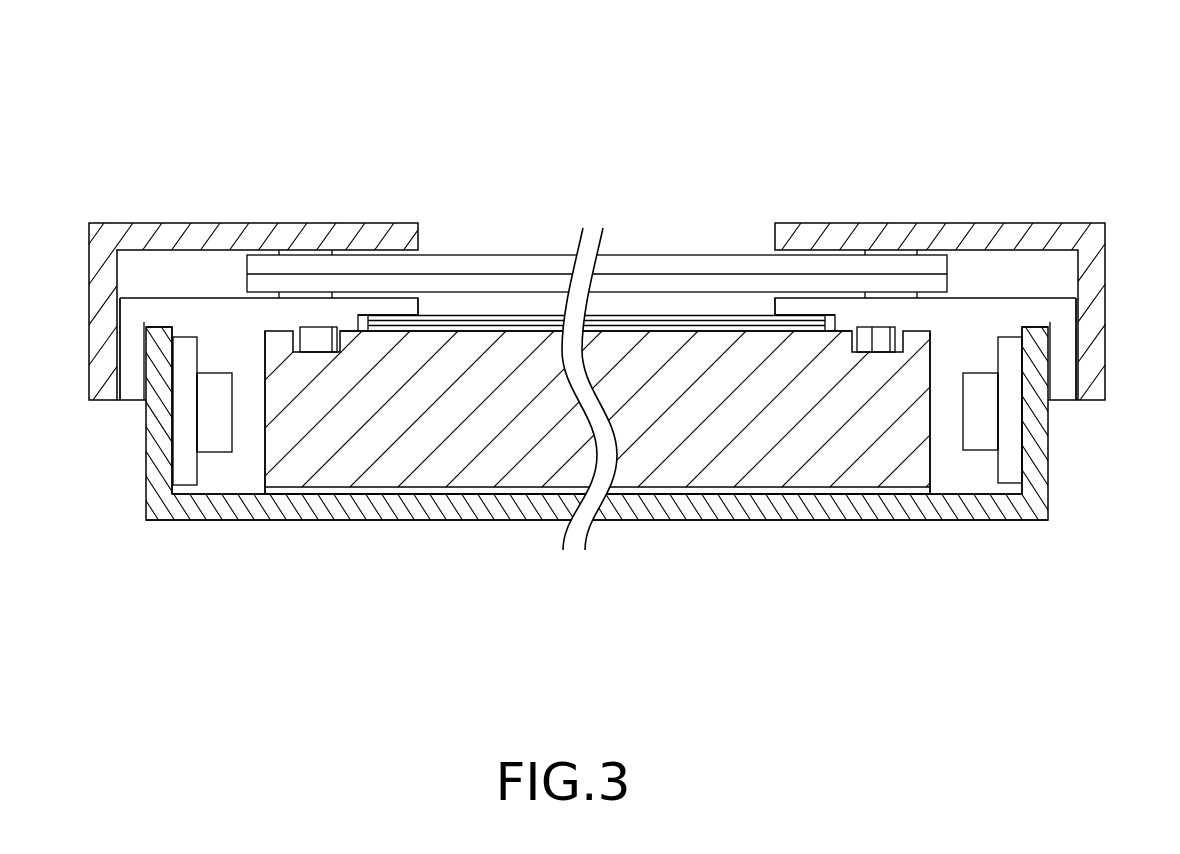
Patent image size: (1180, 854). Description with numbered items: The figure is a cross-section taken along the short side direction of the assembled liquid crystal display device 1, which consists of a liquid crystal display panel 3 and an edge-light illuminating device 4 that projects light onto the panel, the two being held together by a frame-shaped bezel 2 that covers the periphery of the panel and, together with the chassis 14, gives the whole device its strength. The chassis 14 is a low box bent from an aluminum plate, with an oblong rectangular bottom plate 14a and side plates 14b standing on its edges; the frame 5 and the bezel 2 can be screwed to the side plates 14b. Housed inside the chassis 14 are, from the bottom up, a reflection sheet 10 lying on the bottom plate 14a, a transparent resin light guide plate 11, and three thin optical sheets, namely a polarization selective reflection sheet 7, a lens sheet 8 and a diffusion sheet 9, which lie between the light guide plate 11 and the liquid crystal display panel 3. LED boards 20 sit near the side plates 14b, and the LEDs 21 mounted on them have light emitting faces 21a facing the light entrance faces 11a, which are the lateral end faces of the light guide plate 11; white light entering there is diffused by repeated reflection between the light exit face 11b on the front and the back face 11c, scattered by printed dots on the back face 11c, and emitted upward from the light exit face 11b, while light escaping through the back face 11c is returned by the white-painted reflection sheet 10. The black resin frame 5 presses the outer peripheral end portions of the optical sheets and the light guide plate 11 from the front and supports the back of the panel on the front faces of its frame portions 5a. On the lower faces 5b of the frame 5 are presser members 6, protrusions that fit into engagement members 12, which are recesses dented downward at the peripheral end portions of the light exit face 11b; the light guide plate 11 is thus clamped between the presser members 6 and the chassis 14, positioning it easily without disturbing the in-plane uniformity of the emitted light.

The liquid crystal display device 1 is at (1019, 101).
The bezel 2 is at (898, 224).
The liquid crystal display panel 3 is at (713, 230).
The illuminating device 4 is at (1082, 517).
The frame 5 is at (1000, 268).
The frame portions 5a is at (190, 310).
The lower faces of the frame 5b is at (243, 337).
The presser members 6 is at (312, 337).
The polarization selective reflection sheet 7 is at (470, 315).
The lens sheet 8 is at (502, 321).
The diffusion sheet 9 is at (540, 327).
The reflection sheet 10 is at (413, 494).
The light guide plate 11 is at (508, 453).
The light entrance faces 11a is at (265, 420).
The light exit face 11b is at (665, 331).
The back face 11c is at (653, 494).
The engagement members 12 is at (327, 343).
The chassis 14 is at (823, 547).
The bottom plate 14a is at (727, 520).
The side plates 14b is at (150, 443).
The LED boards 20 is at (213, 440).
The LEDs 21 is at (173, 525).
The light emitting faces 21a is at (233, 435).